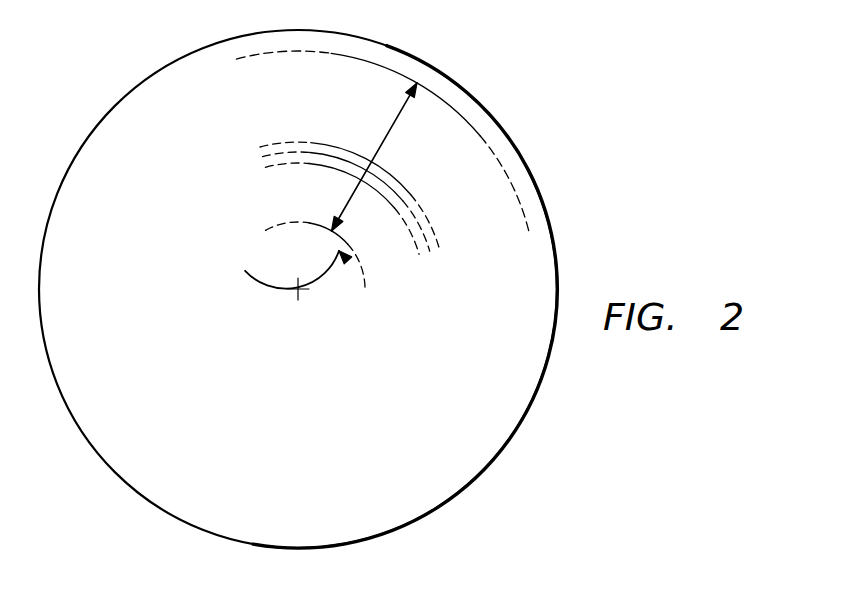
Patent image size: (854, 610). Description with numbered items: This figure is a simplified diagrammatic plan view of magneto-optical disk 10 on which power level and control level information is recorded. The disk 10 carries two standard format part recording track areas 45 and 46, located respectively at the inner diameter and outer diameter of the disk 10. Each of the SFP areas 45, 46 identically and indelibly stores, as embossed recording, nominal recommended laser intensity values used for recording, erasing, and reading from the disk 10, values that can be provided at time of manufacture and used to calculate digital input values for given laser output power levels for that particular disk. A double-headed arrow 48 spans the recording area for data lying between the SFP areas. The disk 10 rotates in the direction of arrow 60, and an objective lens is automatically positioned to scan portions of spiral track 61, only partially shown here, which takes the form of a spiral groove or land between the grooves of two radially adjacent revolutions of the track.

The magneto-optical disk 10 is at (96, 129).
The standard format part recording track area 45 is at (329, 224).
The standard format part recording track area 46 is at (438, 118).
The double-headed arrow 48 is at (391, 128).
The arrow 60 is at (344, 323).
The spiral track 61 is at (331, 166).